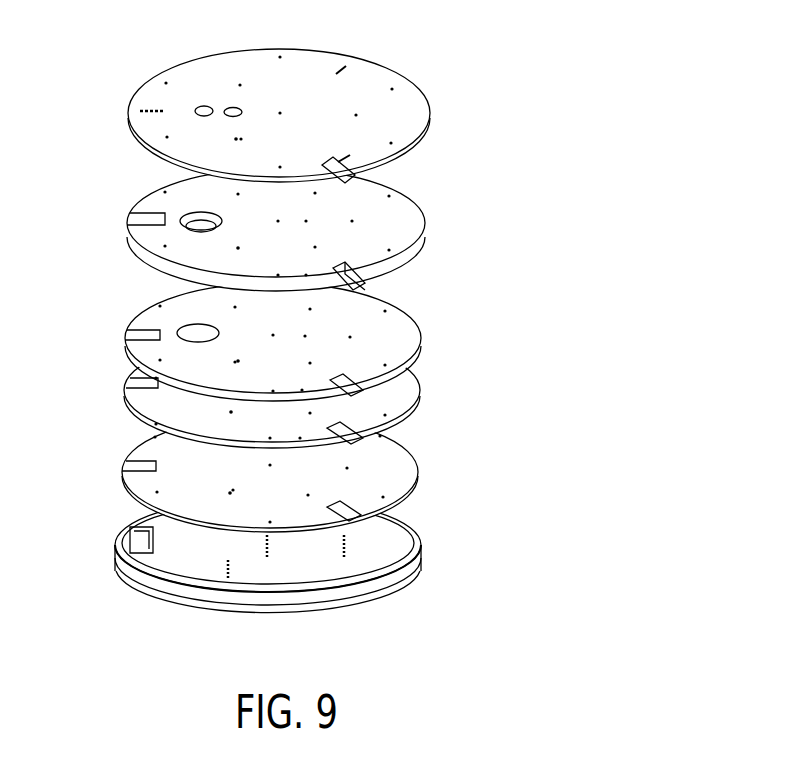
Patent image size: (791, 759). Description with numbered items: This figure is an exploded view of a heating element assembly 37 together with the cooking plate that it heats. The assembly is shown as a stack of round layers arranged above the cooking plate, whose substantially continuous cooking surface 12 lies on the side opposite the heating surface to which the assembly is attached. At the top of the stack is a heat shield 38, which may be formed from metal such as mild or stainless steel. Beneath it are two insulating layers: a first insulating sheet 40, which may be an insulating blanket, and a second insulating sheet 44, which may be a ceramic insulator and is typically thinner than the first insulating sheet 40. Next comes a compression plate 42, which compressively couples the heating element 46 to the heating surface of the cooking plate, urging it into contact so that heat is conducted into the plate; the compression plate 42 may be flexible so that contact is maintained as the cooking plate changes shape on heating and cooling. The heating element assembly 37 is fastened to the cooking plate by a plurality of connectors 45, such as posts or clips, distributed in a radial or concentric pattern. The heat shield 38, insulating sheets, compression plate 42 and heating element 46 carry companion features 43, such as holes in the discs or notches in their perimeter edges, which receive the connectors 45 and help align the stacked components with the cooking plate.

The heating element assembly 37 is at (425, 55).
The heat shield 38 is at (413, 144).
The first insulating sheet 40 is at (151, 263).
The compression plate 42 is at (419, 343).
The second insulating sheet 44 is at (146, 412).
The heating element 46 is at (418, 472).
The cooking surface 12 is at (344, 559).
The companion features 43 is at (235, 139).
The connectors 45 is at (228, 565).